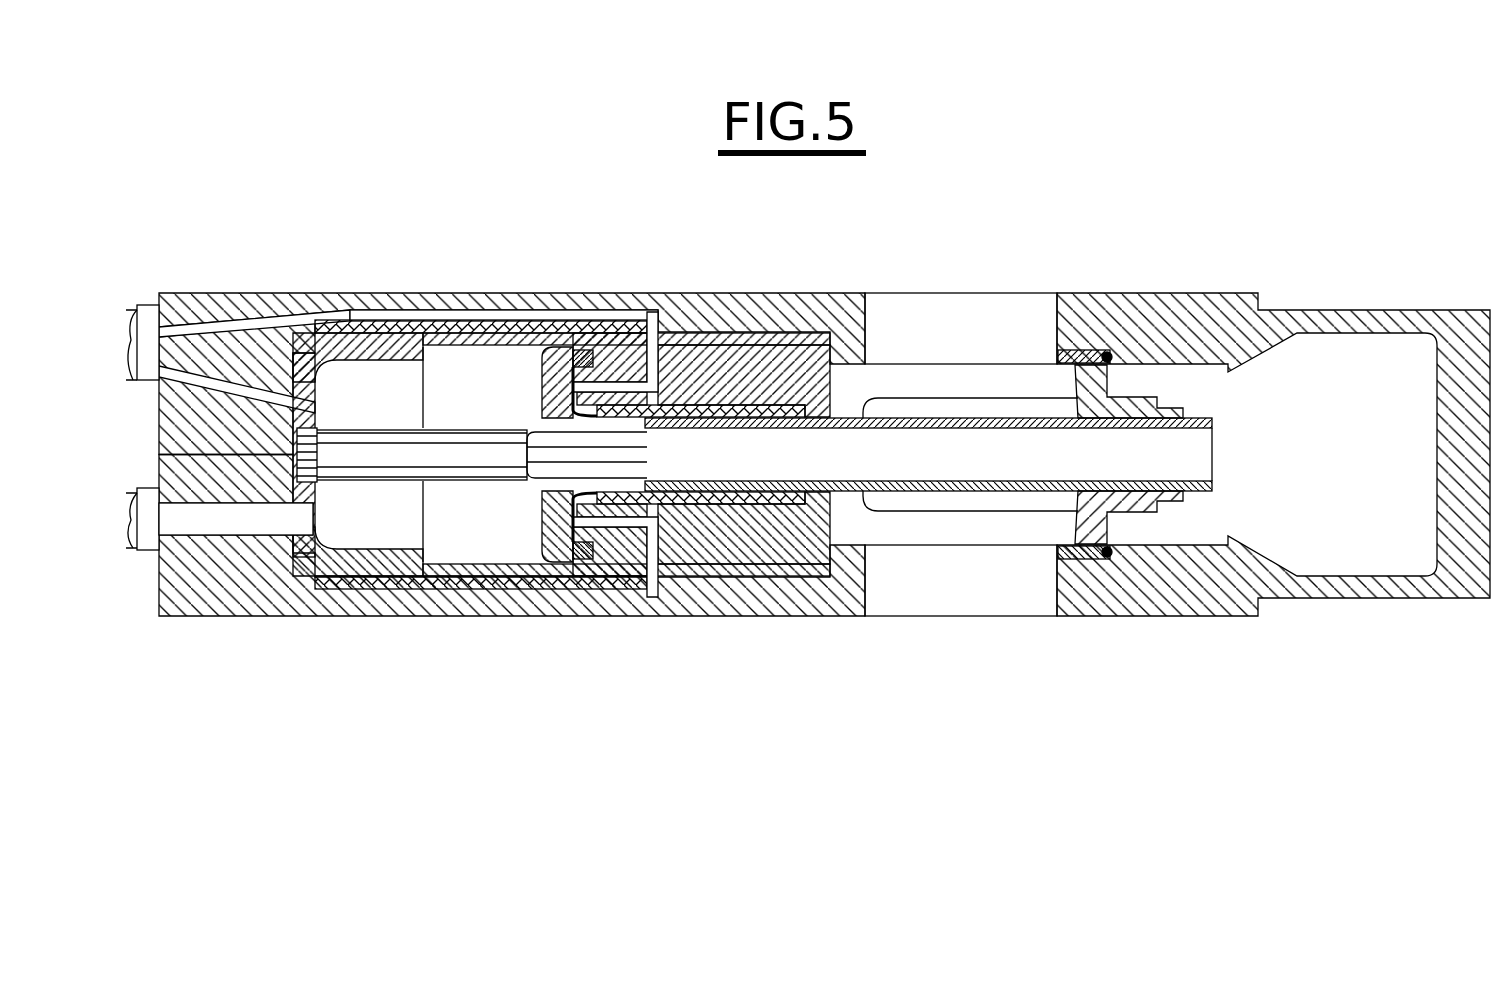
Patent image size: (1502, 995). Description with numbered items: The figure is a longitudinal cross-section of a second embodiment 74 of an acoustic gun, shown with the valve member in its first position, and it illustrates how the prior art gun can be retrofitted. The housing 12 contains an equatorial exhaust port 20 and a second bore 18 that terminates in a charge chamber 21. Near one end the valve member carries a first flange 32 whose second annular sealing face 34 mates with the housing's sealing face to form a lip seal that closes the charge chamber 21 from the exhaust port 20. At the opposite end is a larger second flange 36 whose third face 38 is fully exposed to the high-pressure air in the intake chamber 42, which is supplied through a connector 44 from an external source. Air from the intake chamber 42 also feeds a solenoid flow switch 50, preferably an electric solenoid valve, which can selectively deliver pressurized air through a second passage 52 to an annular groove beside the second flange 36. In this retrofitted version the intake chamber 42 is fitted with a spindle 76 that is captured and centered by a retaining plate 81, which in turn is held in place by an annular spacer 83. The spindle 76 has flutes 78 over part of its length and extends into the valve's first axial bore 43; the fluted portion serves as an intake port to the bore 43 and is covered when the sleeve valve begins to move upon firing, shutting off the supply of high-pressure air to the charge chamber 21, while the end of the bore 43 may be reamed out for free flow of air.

The housing 12 is at (1325, 306).
The second bore 18 is at (1202, 370).
The equatorial exhaust port 20 is at (988, 325).
The charge chamber 21 is at (1377, 470).
The first flange 32 is at (1090, 505).
The second annular sealing face 34 is at (1107, 392).
The second flange 36 is at (565, 355).
The third face 38 is at (540, 390).
The intake chamber 42 is at (492, 533).
The first axial bore 43 is at (770, 464).
The connector 44 is at (170, 530).
The solenoid flow switch 50 is at (150, 323).
The second passage 52 is at (262, 318).
The second embodiment 74 is at (408, 62).
The spindle 76 is at (380, 457).
The flutes 78 is at (575, 456).
The retaining plate 81 is at (333, 383).
The annular spacer 83 is at (393, 347).